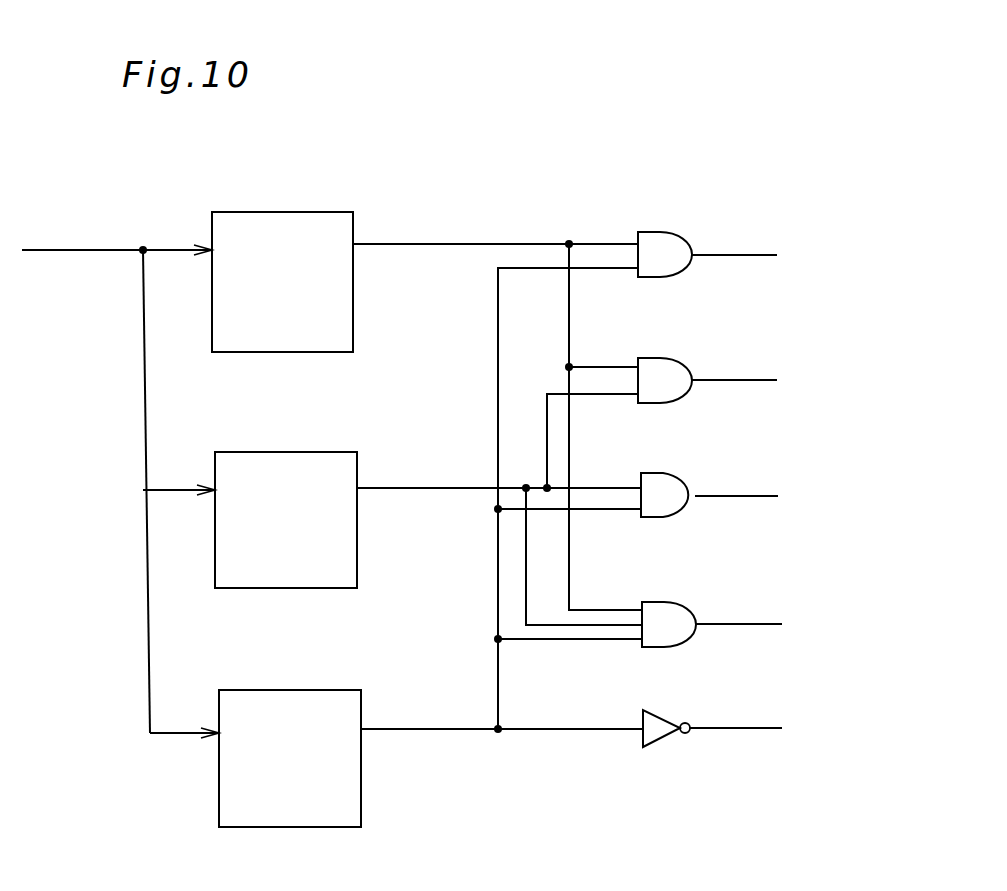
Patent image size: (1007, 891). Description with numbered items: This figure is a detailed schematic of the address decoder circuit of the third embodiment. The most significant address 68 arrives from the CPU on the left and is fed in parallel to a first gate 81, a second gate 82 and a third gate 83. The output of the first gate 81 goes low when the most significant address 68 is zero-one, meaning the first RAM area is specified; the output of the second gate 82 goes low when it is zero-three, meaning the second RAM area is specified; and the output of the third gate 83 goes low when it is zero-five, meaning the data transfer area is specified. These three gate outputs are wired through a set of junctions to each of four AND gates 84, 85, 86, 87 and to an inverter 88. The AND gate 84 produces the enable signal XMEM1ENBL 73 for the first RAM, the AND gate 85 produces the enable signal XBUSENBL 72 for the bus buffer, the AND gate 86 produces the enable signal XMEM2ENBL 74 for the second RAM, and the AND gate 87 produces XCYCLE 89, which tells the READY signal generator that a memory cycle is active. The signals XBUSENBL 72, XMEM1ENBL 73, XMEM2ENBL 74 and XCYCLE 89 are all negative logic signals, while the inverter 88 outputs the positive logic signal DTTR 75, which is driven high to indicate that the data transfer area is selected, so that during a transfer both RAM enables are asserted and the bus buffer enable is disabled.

The most significant address 68 is at (115, 192).
The first gate 81 is at (355, 222).
The second gate 82 is at (302, 452).
The third gate 83 is at (313, 690).
The AND gate 84 is at (662, 232).
The AND gate 85 is at (662, 358).
The AND gate 86 is at (665, 473).
The AND gate 87 is at (666, 602).
The inverter 88 is at (665, 710).
The enable signal XMEM1ENBL 73 is at (757, 255).
The enable signal XBUSENBL 72 is at (757, 380).
The enable signal XMEM2ENBL 74 is at (760, 496).
The XCYCLE signal 89 is at (765, 624).
The DTTR signal 75 is at (765, 728).